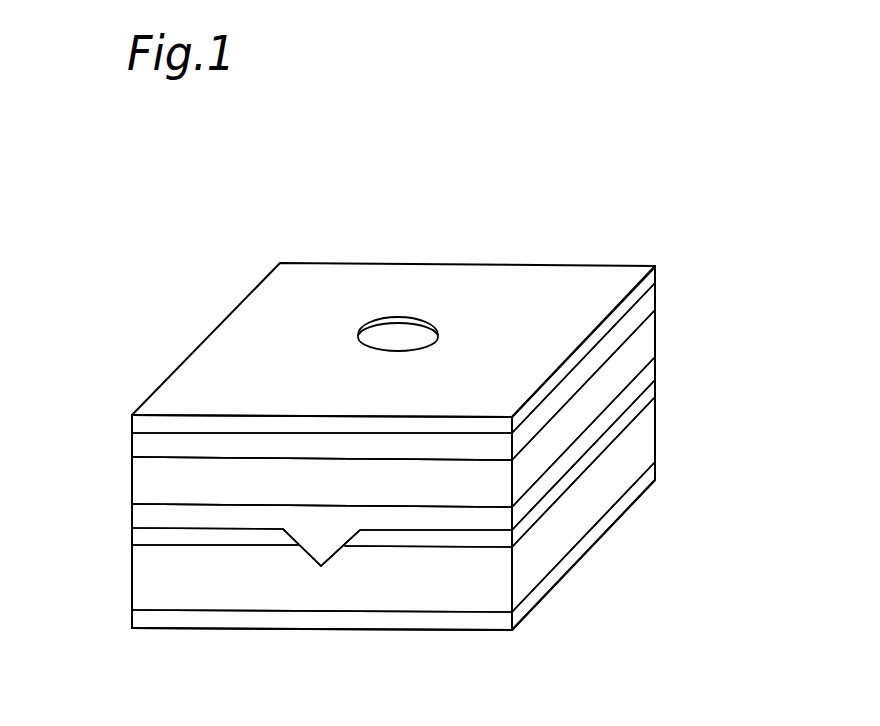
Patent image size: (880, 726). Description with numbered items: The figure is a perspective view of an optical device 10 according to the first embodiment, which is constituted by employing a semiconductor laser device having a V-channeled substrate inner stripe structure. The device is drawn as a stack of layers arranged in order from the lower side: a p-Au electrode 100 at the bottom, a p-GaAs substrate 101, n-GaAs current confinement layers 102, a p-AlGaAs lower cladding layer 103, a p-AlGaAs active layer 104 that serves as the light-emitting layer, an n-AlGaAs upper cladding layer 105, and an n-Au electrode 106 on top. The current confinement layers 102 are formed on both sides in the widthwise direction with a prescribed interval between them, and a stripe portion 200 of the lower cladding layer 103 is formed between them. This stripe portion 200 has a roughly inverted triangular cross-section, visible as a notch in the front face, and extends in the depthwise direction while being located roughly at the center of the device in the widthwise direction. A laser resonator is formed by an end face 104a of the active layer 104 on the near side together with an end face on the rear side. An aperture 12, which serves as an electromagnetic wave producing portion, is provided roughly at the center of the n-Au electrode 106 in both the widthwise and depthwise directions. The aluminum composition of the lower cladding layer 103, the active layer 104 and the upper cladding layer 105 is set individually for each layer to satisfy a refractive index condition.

The optical device 10 is at (552, 205).
The aperture 12 is at (404, 336).
The p-Au electrode 100 is at (648, 492).
The p-GaAs substrate 101 is at (648, 440).
The n-GaAs current confinement layers 102 is at (648, 402).
The p-AlGaAs lower cladding layer 103 is at (648, 374).
The p-AlGaAs active layer 104 is at (648, 342).
The end face 104a is at (148, 479).
The n-AlGaAs upper cladding layer 105 is at (657, 305).
The n-Au electrode 106 is at (657, 269).
The stripe portion 200 is at (332, 541).